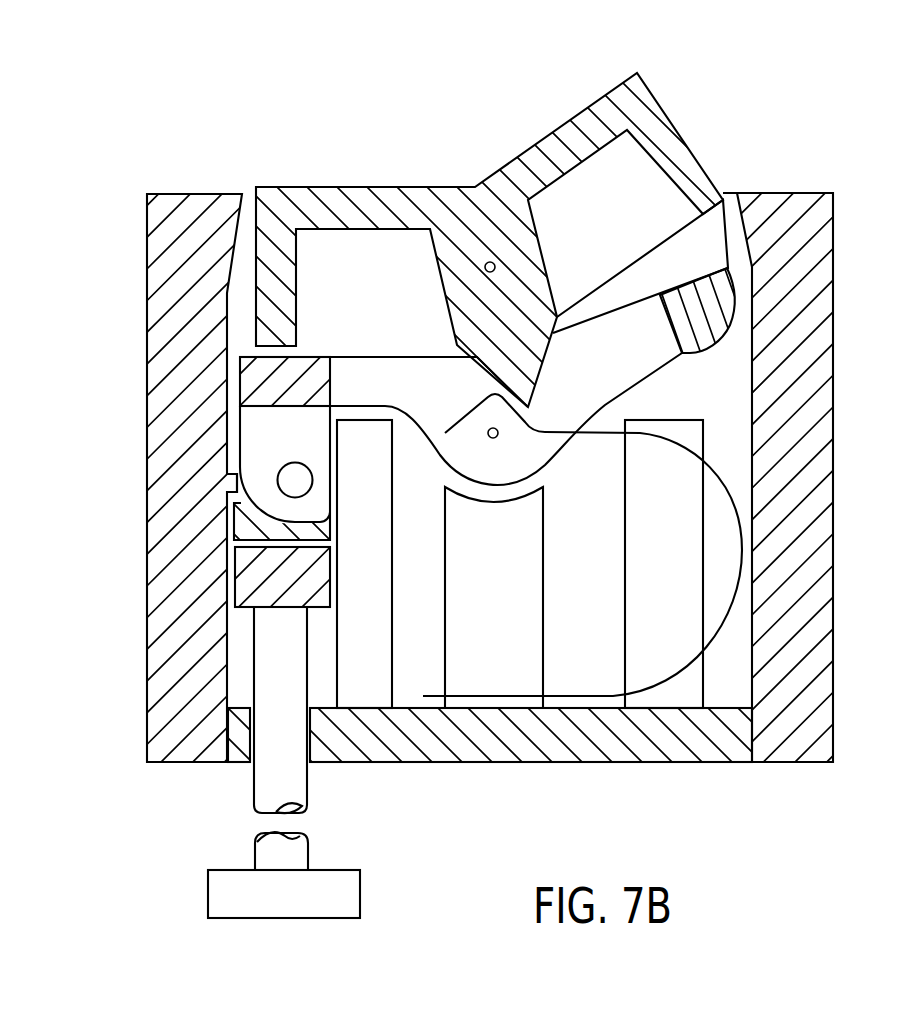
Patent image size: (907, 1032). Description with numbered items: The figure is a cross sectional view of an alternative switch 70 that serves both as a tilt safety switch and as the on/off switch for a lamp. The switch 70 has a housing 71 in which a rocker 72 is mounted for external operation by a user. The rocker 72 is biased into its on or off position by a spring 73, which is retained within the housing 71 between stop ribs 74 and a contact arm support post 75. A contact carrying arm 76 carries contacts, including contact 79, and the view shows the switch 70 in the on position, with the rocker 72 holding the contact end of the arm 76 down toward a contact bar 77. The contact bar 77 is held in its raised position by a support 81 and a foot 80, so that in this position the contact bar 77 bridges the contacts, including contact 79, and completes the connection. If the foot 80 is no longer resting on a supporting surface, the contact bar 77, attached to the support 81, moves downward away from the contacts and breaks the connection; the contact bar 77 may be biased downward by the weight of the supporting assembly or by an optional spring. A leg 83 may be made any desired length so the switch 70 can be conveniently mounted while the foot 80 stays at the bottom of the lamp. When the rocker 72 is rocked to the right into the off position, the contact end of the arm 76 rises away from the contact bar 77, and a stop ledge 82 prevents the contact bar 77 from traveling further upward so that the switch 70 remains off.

The switch 70 is at (88, 174).
The housing 71 is at (803, 313).
The rocker 72 is at (563, 146).
The spring 73 is at (727, 465).
The stop ribs 74 is at (520, 564).
The contact arm support post 75 is at (494, 597).
The contact carrying arm 76 is at (242, 378).
The contact bar 77 is at (243, 526).
The contact 79 is at (292, 477).
The foot 80 is at (332, 908).
The support 81 is at (255, 572).
The stop ledge 82 is at (223, 483).
The leg 83 is at (298, 782).